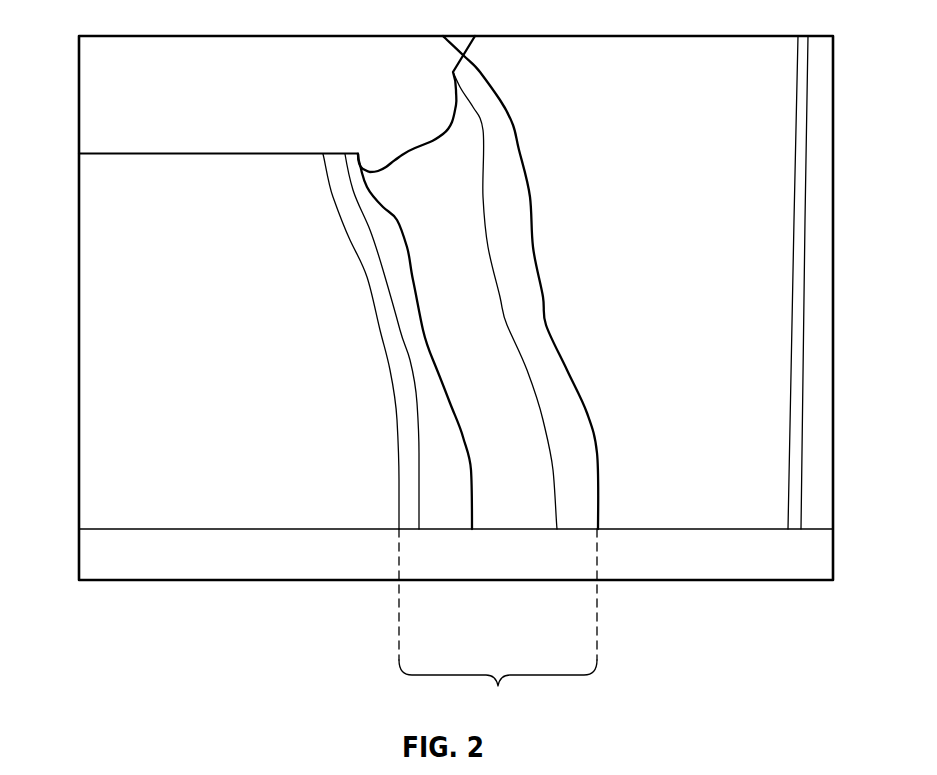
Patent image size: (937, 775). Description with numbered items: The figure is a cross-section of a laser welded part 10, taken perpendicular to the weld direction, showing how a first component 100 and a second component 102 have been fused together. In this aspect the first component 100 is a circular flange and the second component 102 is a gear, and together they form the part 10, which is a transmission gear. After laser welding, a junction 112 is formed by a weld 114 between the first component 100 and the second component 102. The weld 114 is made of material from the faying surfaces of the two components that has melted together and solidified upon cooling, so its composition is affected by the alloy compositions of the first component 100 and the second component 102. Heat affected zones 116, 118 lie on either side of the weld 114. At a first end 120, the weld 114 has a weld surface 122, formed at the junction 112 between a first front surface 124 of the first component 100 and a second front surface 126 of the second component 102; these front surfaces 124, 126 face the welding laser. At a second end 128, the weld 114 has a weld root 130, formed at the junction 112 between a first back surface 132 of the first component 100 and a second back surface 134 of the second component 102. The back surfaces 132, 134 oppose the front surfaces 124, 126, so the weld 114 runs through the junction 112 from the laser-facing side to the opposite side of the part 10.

The part 10 is at (100, 618).
The first component 100 is at (98, 425).
The second component 102 is at (772, 303).
The junction 112 is at (498, 626).
The weld 114 is at (437, 240).
The heat affected zone 116 is at (543, 308).
The heat affected zone 118 is at (413, 327).
The first end 120 is at (431, 128).
The weld surface 122 is at (400, 163).
The first front surface 124 is at (148, 153).
The second front surface 126 is at (443, 36).
The second end 128 is at (470, 548).
The weld root 130 is at (508, 523).
The first back surface 132 is at (217, 532).
The second back surface 134 is at (708, 532).